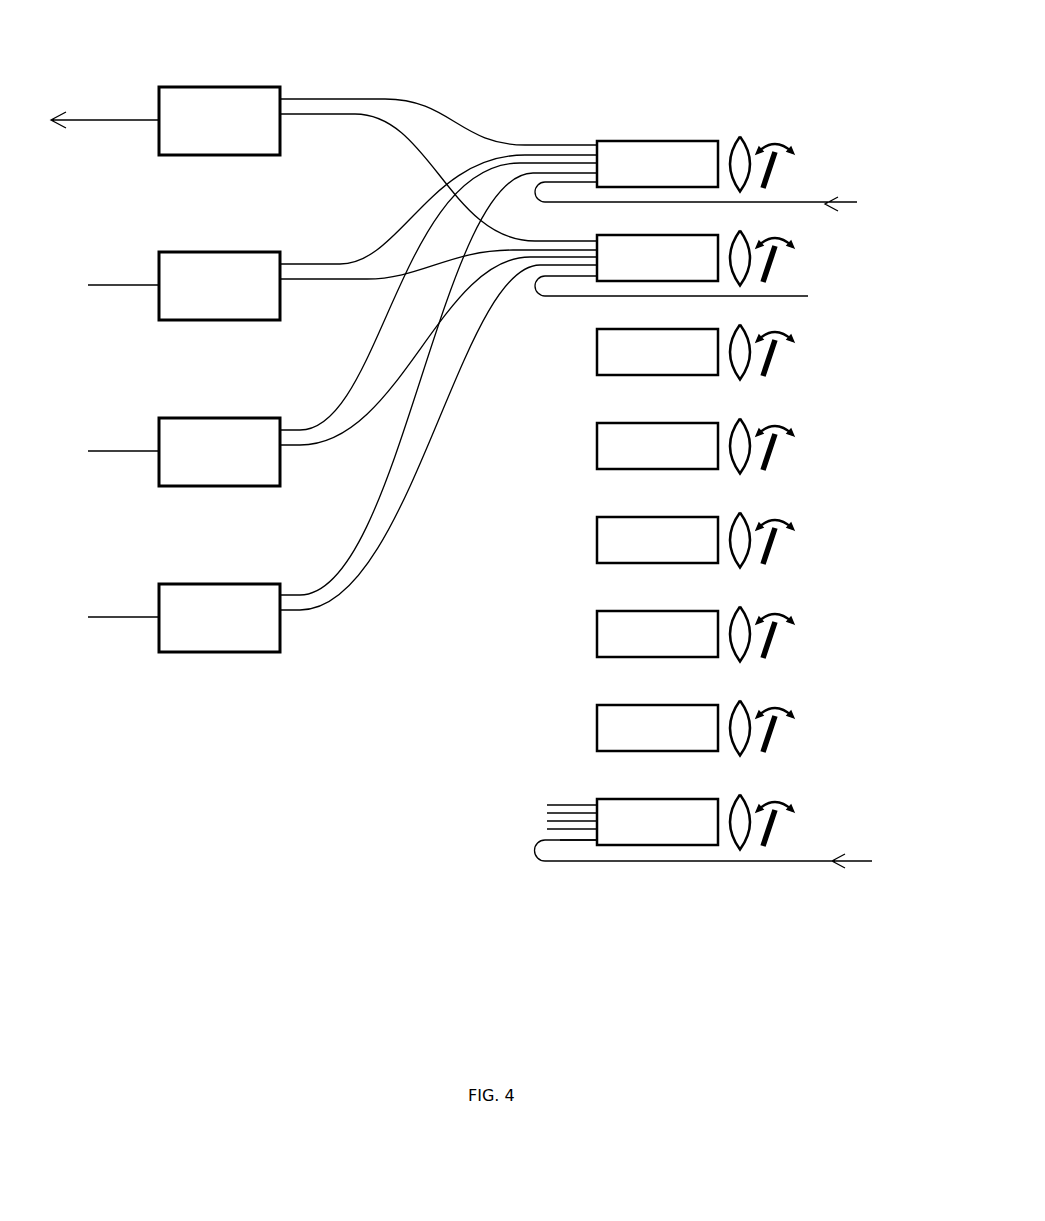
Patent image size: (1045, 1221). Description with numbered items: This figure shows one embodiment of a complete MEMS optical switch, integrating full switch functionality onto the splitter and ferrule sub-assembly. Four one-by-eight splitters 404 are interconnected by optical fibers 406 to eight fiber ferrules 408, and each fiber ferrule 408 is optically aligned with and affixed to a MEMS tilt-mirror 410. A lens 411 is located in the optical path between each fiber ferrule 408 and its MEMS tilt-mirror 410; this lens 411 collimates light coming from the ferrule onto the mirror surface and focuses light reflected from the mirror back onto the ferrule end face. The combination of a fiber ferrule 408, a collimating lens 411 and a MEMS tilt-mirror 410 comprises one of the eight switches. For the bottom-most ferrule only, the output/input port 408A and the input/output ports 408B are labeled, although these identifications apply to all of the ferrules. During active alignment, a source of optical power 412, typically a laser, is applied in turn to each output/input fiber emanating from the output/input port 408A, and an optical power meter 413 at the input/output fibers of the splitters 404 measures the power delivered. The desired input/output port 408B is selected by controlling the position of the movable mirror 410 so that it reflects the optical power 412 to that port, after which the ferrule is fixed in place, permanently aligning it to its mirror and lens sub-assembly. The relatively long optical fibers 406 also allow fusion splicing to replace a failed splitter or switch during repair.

The 1×8 splitter 404 is at (184, 383).
The optical fiber 406 is at (393, 102).
The fiber ferrule 408 is at (657, 482).
The output/input port 408A is at (594, 843).
The input/output port 408B is at (594, 828).
The MEMS tilt-mirror 410 is at (783, 133).
The lens 411 is at (740, 483).
The optical power 412 is at (737, 528).
The optical power meter 413 is at (100, 87).